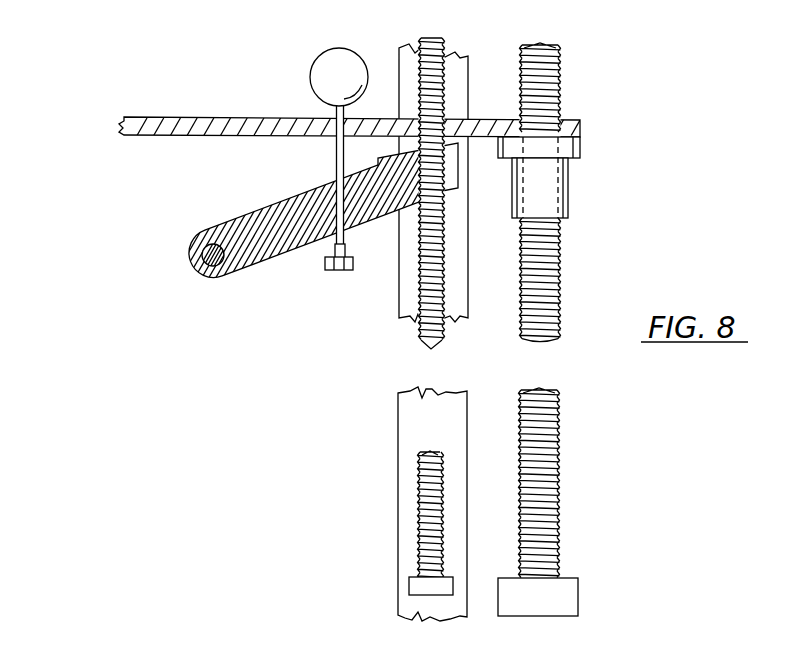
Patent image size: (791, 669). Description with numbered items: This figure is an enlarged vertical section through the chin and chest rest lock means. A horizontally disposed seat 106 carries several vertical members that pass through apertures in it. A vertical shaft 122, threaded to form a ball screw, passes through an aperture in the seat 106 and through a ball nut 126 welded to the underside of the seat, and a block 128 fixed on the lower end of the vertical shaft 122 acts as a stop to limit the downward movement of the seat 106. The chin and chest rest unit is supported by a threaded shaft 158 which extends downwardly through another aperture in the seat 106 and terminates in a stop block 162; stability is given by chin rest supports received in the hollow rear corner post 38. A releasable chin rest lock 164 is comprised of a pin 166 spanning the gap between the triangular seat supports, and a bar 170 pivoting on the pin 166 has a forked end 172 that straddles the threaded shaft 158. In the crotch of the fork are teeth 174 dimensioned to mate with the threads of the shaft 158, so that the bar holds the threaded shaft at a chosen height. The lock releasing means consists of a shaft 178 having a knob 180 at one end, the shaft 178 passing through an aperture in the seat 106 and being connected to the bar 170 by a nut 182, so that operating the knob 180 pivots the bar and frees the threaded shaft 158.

The rear corner post 38 is at (407, 483).
The seat 106 is at (166, 116).
The vertical shaft 122 is at (561, 85).
The ball nut 126 is at (566, 150).
The block 128 is at (567, 596).
The threaded shaft 158 is at (436, 292).
The stop block 162 is at (418, 588).
The releasable chin rest lock 164 is at (353, 222).
The pin 166 is at (196, 272).
The bar 170 is at (275, 255).
The forked end 172 is at (452, 167).
The teeth 174 is at (407, 212).
The shaft 178 is at (336, 146).
The knob 180 is at (327, 58).
The nut 182 is at (338, 271).